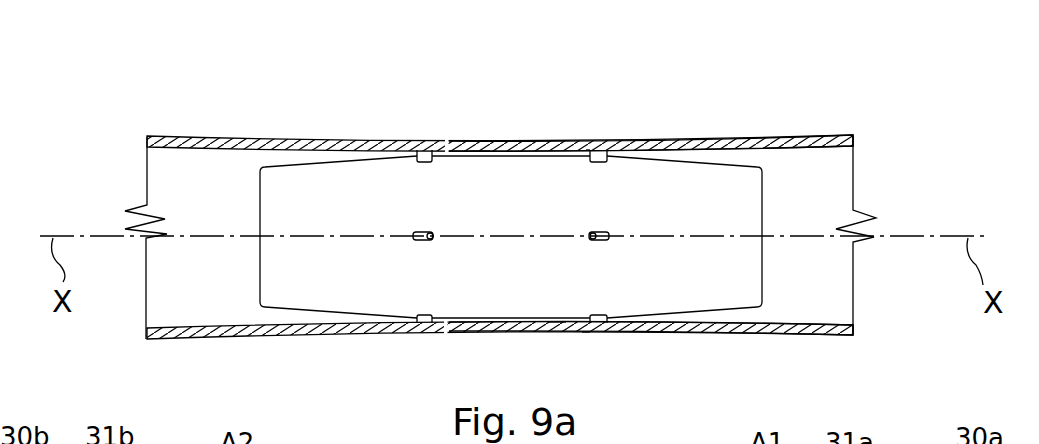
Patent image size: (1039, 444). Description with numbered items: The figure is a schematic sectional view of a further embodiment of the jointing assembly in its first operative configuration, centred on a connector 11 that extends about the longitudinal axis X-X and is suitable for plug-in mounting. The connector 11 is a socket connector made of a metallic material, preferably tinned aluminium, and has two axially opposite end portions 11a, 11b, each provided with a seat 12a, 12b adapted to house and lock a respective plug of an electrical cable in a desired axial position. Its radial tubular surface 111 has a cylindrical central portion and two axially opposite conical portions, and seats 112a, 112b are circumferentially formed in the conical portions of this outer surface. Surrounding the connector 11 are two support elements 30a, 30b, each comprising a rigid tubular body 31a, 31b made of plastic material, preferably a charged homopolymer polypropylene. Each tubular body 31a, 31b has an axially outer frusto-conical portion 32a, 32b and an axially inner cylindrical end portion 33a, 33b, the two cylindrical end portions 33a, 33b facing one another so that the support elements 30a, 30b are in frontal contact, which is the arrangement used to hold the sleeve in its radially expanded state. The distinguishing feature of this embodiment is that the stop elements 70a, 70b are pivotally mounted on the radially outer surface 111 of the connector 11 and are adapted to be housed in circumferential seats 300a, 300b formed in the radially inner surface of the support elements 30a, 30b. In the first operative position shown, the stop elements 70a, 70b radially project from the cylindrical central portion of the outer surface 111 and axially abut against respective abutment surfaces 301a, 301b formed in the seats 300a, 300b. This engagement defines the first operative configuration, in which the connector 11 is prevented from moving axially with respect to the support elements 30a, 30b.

The connector 11 is at (510, 287).
The end portion 11a is at (759, 325).
The end portion 11b is at (286, 344).
The radial tubular surface 111 is at (318, 333).
The seat 12a is at (784, 275).
The seat 12b is at (243, 283).
The seat 112a is at (762, 202).
The seat 112b is at (260, 197).
The support element 30a is at (721, 228).
The support element 30b is at (459, 232).
The tubular body 31a is at (800, 172).
The tubular body 31b is at (208, 177).
The frusto-conical portion 32a is at (823, 356).
The frusto-conical portion 32b is at (241, 352).
The cylindrical end portion 33a is at (591, 346).
The cylindrical end portion 33b is at (463, 351).
The stop element 70a is at (599, 150).
The stop element 70b is at (426, 150).
The circumferential seat 300a is at (563, 307).
The circumferential seat 300b is at (483, 162).
The abutment surface 301a is at (591, 152).
The abutment surface 301b is at (447, 140).